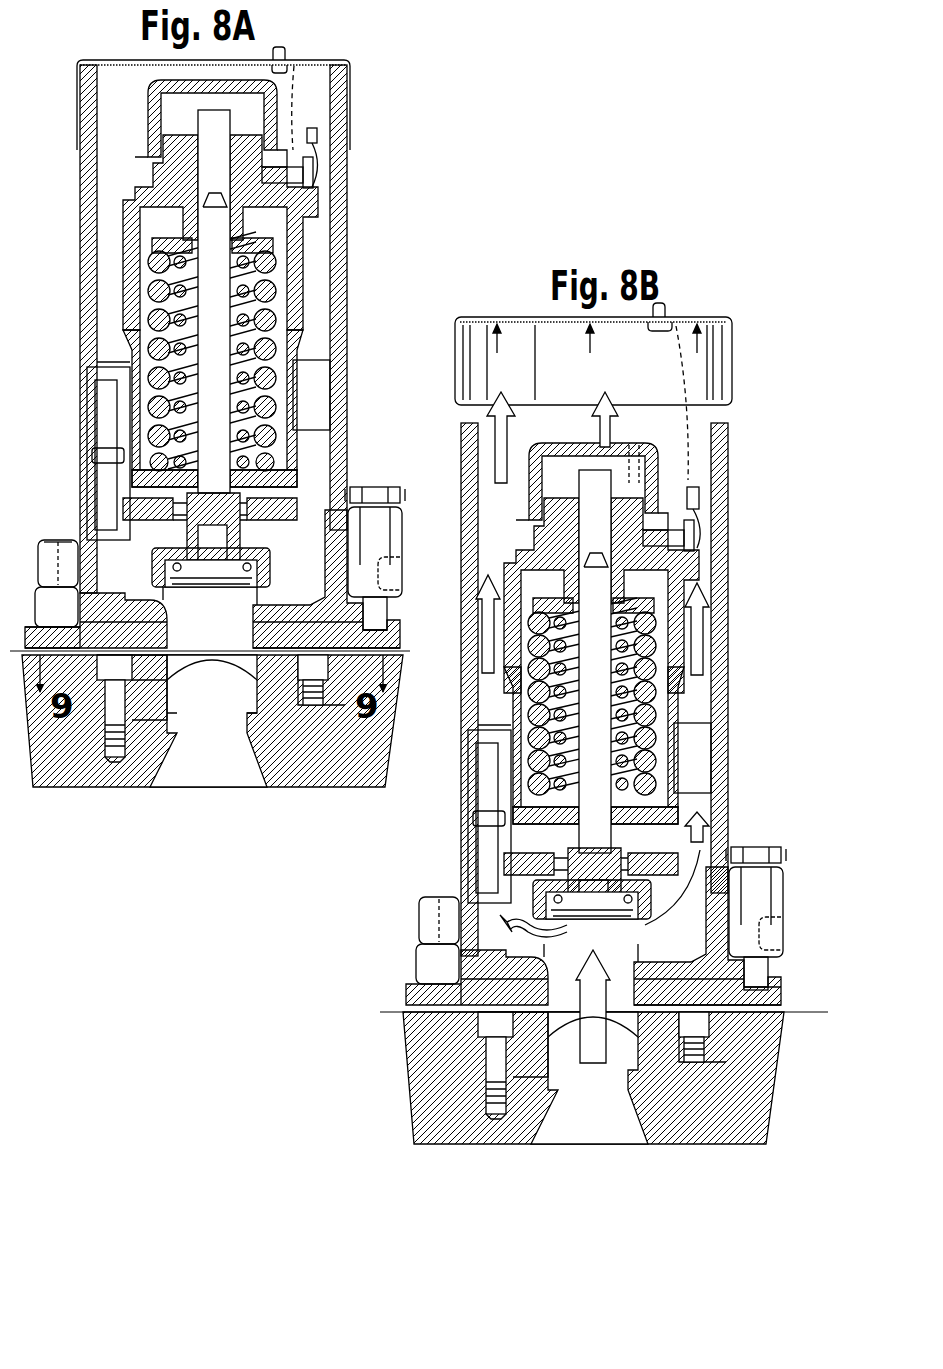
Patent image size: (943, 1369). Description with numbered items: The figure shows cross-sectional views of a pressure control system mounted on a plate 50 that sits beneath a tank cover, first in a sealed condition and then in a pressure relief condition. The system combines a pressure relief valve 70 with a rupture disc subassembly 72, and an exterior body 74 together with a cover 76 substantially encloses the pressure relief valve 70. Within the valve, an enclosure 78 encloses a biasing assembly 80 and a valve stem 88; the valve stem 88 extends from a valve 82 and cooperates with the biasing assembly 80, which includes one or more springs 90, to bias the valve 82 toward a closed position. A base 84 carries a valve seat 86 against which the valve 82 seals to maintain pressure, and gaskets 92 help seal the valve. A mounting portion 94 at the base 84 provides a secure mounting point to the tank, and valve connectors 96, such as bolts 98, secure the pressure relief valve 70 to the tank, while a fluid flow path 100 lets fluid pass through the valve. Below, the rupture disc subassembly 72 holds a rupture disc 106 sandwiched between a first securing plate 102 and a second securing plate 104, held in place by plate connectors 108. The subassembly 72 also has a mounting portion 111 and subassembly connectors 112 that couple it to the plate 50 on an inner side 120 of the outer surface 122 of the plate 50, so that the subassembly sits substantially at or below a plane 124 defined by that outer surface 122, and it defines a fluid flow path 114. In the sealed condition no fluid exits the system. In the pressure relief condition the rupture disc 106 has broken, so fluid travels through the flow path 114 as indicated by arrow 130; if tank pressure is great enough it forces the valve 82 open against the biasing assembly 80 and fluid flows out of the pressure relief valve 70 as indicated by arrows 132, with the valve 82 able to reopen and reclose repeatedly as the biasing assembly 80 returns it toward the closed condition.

In FIG. 8A, the plate 50 is at (38, 705).
In FIG. 8B, the plate 50 is at (430, 1085).
In FIG. 8A, the pressure relief valve 70 is at (223, 430).
In FIG. 8B, the pressure relief valve 70 is at (576, 743).
In FIG. 8A, the rupture disc subassembly 72 is at (95, 680).
In FIG. 8B, the rupture disc subassembly 72 is at (513, 1048).
In FIG. 8A, the exterior body 74 is at (352, 202).
In FIG. 8B, the exterior body 74 is at (730, 457).
In FIG. 8A, the cover 76 is at (112, 58).
In FIG. 8B, the cover 76 is at (733, 333).
In FIG. 8A, the enclosure 78 is at (123, 240).
In FIG. 8B, the enclosure 78 is at (660, 697).
In FIG. 8A, the biasing assembly 80 is at (140, 318).
In FIG. 8B, the biasing assembly 80 is at (668, 730).
In FIG. 8A, the valve 82 is at (240, 547).
In FIG. 8B, the valve 82 is at (670, 827).
In FIG. 8A, the base 84 is at (100, 622).
In FIG. 8B, the base 84 is at (593, 936).
In FIG. 8A, the valve seat 86 is at (177, 550).
In FIG. 8B, the valve seat 86 is at (600, 903).
In FIG. 8A, the valve stem 88 is at (212, 348).
In FIG. 8B, the valve stem 88 is at (595, 661).
In FIG. 8A, the springs 90 is at (140, 292).
In FIG. 8B, the springs 90 is at (593, 605).
In FIG. 8A, the gaskets 92 is at (216, 575).
In FIG. 8A, the mounting portion 94 is at (65, 639).
In FIG. 8A, the valve connectors 96 is at (45, 567).
In FIG. 8B, the valve connectors 96 is at (425, 931).
In FIG. 8A, the bolts 98 is at (45, 540).
In FIG. 8A, the fluid flow path 100 is at (350, 500).
In FIG. 8B, the fluid flow path 100 is at (756, 918).
In FIG. 8A, the first securing plate 102 is at (370, 642).
In FIG. 8A, the second securing plate 104 is at (115, 715).
In FIG. 8A, the rupture disc 106 is at (275, 660).
In FIG. 8A, the plate connectors 108 is at (305, 705).
In FIG. 8B, the plate connectors 108 is at (690, 1017).
In FIG. 8A, the mounting portion 111 is at (140, 720).
In FIG. 8A, the subassembly connectors 112 is at (35, 777).
In FIG. 8B, the subassembly connectors 112 is at (488, 1023).
In FIG. 8A, the fluid flow path 114 is at (220, 775).
In FIG. 8B, the fluid flow path 114 is at (610, 1125).
In FIG. 8B, the inner side 120 is at (765, 1000).
In FIG. 8B, the outer surface 122 is at (770, 1010).
In FIG. 8B, the plane 124 is at (357, 1010).
In FIG. 8B, the arrow 130 is at (595, 1050).
In FIG. 8B, the arrows 132 is at (497, 415).